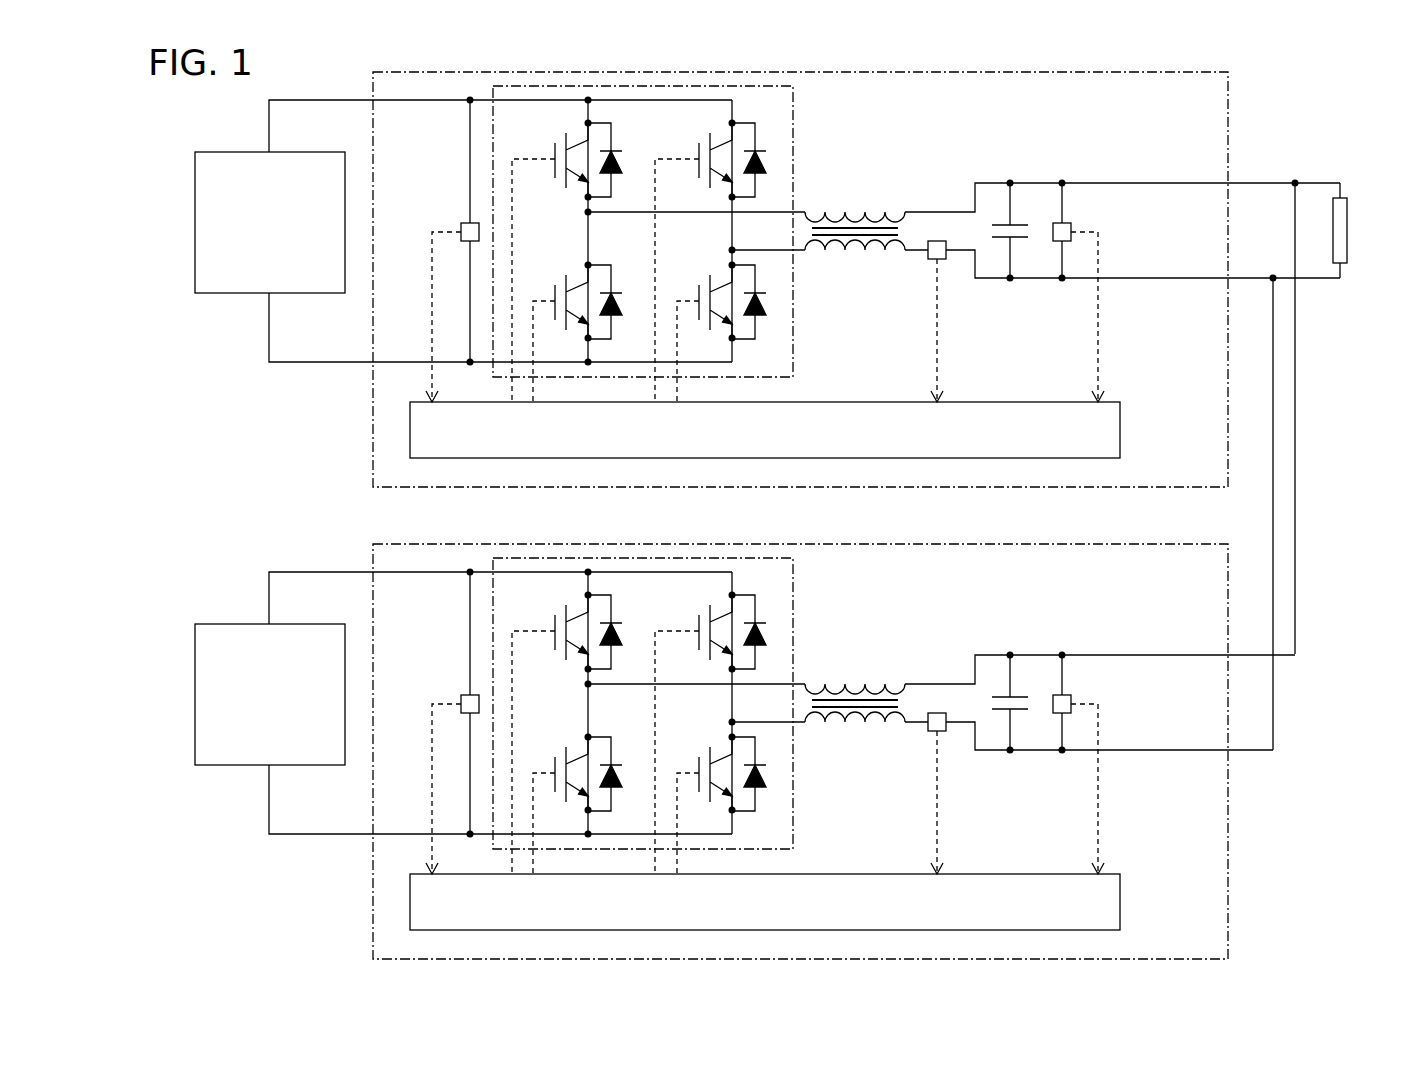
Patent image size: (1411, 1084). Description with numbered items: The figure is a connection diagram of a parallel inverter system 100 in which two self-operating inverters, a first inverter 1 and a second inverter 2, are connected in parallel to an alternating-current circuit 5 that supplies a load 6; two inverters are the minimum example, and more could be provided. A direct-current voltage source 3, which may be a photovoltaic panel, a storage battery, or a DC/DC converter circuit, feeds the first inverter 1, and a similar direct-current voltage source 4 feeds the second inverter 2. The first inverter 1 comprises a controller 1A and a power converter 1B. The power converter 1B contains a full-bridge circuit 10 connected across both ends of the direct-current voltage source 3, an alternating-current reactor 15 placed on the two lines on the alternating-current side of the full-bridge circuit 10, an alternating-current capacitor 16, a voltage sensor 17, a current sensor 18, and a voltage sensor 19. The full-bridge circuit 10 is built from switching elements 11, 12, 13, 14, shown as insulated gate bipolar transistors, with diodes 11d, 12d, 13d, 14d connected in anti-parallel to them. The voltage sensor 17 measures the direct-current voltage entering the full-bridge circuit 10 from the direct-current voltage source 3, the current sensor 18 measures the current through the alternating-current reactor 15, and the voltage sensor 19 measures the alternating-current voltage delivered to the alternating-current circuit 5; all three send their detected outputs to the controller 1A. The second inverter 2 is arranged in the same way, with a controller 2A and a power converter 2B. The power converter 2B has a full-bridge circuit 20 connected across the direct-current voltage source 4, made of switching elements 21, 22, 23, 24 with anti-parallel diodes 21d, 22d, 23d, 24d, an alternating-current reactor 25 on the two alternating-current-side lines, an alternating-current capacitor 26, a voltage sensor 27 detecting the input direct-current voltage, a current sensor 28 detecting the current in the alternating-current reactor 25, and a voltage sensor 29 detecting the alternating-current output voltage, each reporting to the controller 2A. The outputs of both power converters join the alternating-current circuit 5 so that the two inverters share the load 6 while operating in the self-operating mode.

The parallel inverter system 100 is at (305, 519).
The first inverter 1 is at (1228, 85).
The second inverter 2 is at (809, 732).
The direct-current voltage source 3 is at (248, 152).
The direct-current voltage source 4 is at (270, 668).
The alternating-current circuit 5 is at (1340, 170).
The load 6 is at (1347, 232).
The full-bridge circuit 10 is at (793, 115).
The switching element 11 is at (558, 145).
The switching element 12 is at (558, 287).
The switching element 13 is at (700, 145).
The switching element 14 is at (700, 287).
The diode 11d is at (620, 172).
The diode 12d is at (620, 314).
The diode 13d is at (757, 148).
The diode 14d is at (757, 317).
The alternating-current reactor 15 is at (855, 211).
The alternating-current capacitor 16 is at (1005, 224).
The voltage sensor 17 is at (463, 223).
The current sensor 18 is at (943, 260).
The voltage sensor 19 is at (1070, 223).
The controller 1A is at (868, 402).
The power converter 1B is at (952, 111).
The full-bridge circuit 20 is at (674, 703).
The switching element 21 is at (550, 728).
The switching element 22 is at (552, 800).
The switching element 23 is at (693, 728).
The switching element 24 is at (694, 800).
The diode 21d is at (623, 640).
The diode 22d is at (623, 781).
The diode 23d is at (762, 618).
The diode 24d is at (762, 788).
The alternating-current reactor 25 is at (855, 675).
The alternating-current capacitor 26 is at (1002, 703).
The voltage sensor 27 is at (452, 723).
The current sensor 28 is at (950, 793).
The voltage sensor 29 is at (1079, 763).
The controller 2A is at (765, 874).
The power converter 2B is at (988, 582).